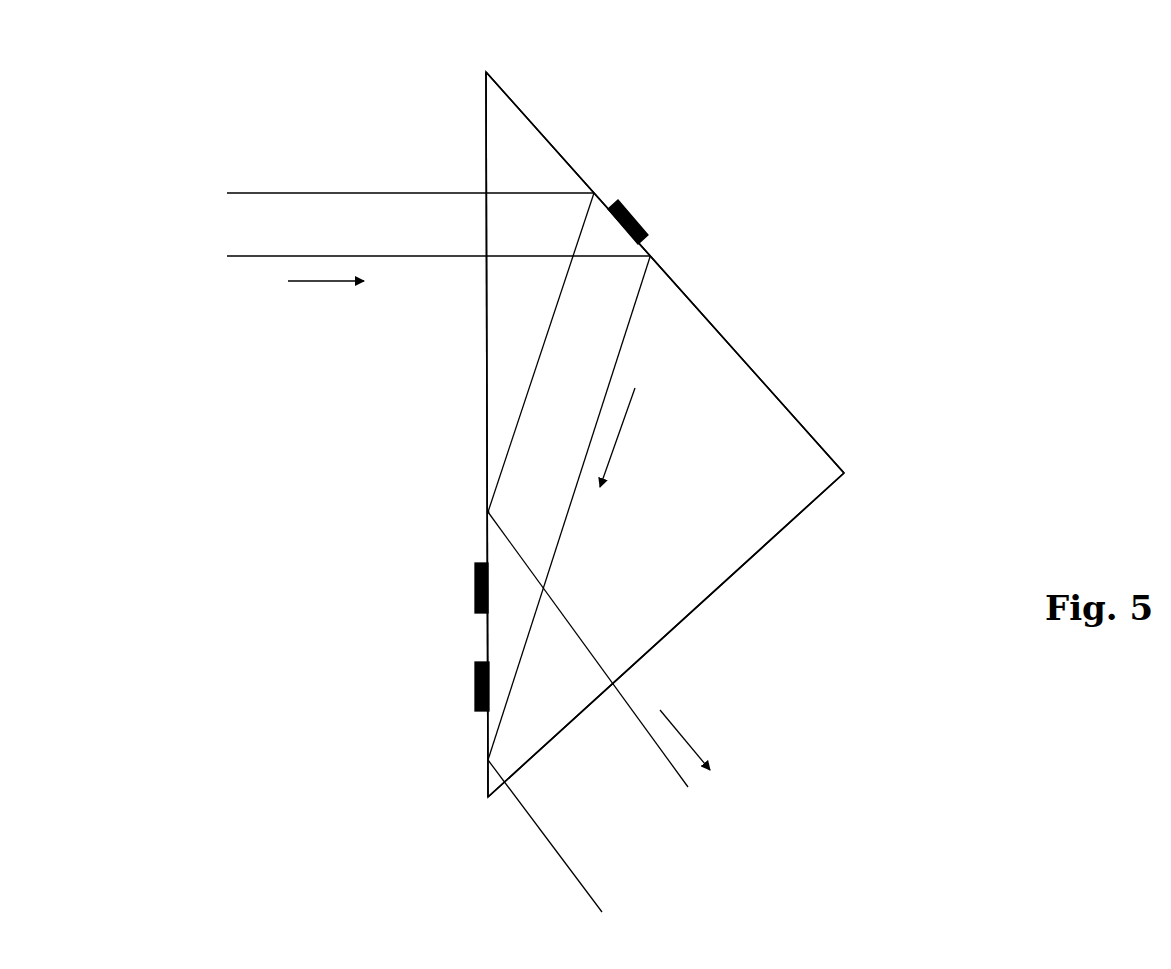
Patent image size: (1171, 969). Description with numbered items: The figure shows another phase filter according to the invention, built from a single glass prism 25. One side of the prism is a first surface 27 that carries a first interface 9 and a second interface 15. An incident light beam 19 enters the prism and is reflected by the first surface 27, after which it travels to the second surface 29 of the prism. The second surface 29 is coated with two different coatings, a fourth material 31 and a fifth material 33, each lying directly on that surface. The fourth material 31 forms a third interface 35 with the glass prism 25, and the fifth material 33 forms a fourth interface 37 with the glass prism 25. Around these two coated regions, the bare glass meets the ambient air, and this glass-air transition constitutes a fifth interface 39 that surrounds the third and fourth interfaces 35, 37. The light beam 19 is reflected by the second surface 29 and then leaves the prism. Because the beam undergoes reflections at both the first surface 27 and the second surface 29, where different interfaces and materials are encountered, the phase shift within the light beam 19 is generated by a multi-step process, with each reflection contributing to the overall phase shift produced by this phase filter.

The first interface 9 is at (638, 242).
The second interface 15 is at (580, 176).
The incident light beam 19 is at (300, 207).
The glass prism 25 is at (498, 132).
The first surface 27 is at (586, 114).
The second surface 29 is at (450, 328).
The fourth material 31 is at (475, 588).
The fifth material 33 is at (477, 695).
The third interface 35 is at (488, 552).
The fourth interface 37 is at (487, 720).
The fifth interface 39 is at (487, 447).